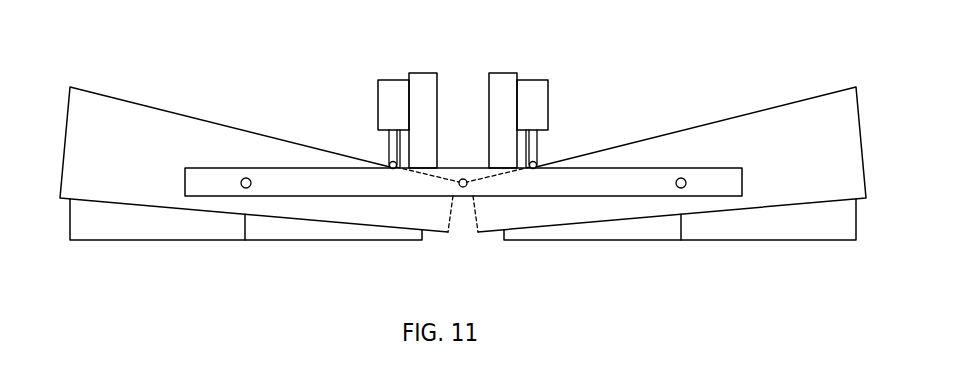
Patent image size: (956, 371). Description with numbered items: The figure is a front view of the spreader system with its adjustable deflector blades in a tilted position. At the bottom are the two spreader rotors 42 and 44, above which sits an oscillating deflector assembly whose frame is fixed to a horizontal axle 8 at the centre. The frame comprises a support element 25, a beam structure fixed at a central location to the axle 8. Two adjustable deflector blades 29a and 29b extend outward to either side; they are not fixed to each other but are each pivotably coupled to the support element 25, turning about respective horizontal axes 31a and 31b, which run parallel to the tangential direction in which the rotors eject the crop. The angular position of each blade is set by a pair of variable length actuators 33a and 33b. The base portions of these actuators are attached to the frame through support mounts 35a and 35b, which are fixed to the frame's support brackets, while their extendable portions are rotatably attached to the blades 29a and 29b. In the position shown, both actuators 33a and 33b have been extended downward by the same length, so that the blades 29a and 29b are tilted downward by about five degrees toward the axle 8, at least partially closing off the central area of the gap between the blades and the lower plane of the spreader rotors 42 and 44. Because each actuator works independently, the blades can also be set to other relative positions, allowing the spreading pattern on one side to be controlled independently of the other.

The horizontal axle 8 is at (463, 179).
The support element 25 is at (337, 182).
The adjustable deflector blade 29a is at (118, 117).
The adjustable deflector blade 29b is at (768, 130).
The horizontal axis 31a is at (247, 178).
The horizontal axis 31b is at (682, 178).
The variable length actuator 33a is at (389, 94).
The variable length actuator 33b is at (537, 100).
The support mount 35a is at (427, 83).
The support mount 35b is at (500, 95).
The spreader rotor 42 is at (187, 230).
The spreader rotor 44 is at (755, 230).